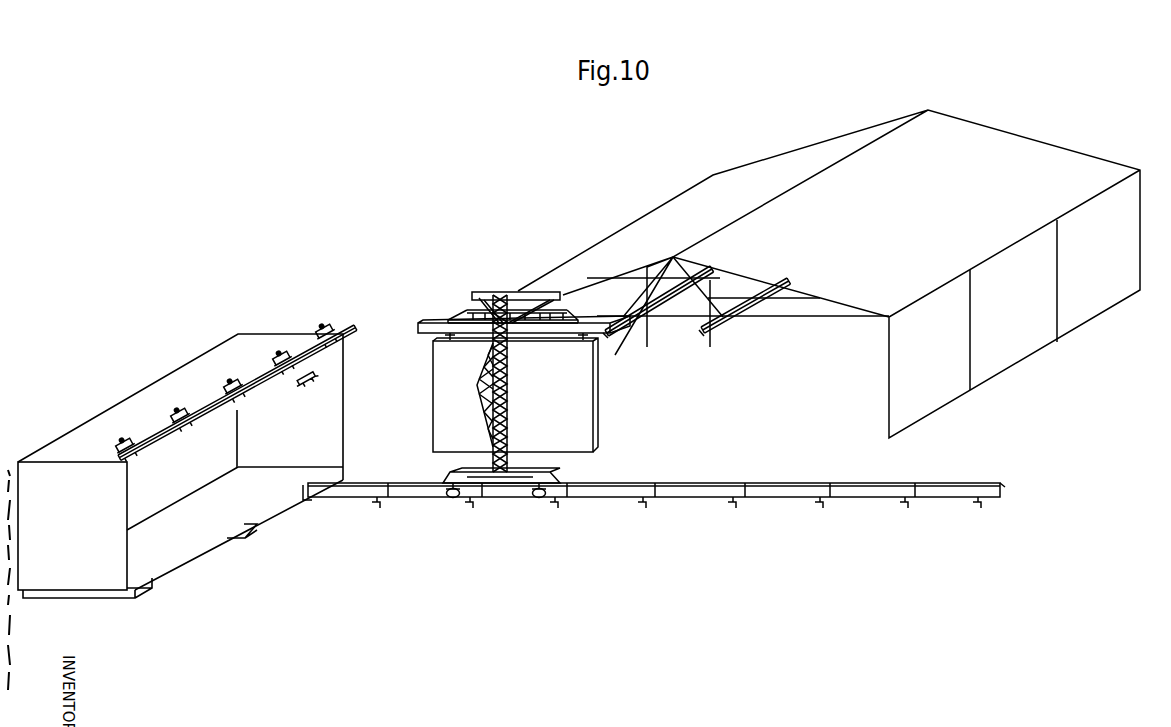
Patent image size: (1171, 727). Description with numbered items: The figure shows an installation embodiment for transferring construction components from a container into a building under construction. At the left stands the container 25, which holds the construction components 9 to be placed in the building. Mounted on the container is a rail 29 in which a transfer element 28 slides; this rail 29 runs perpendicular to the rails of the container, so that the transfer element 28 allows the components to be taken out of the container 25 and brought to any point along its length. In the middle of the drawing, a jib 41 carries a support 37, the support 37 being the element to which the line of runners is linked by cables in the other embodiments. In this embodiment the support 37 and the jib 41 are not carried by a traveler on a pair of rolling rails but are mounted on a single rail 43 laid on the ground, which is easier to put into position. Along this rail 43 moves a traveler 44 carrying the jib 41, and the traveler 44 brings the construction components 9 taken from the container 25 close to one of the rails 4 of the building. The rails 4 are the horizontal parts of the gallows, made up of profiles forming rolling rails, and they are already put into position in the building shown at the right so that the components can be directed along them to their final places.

The rail 4 is at (762, 313).
The construction component 9 is at (552, 366).
The container 25 is at (268, 486).
The transfer element 28 is at (315, 380).
The rail 29 is at (348, 327).
The support 37 is at (433, 321).
The jib 41 is at (483, 397).
The rail 43 is at (887, 486).
The traveler 44 is at (540, 486).